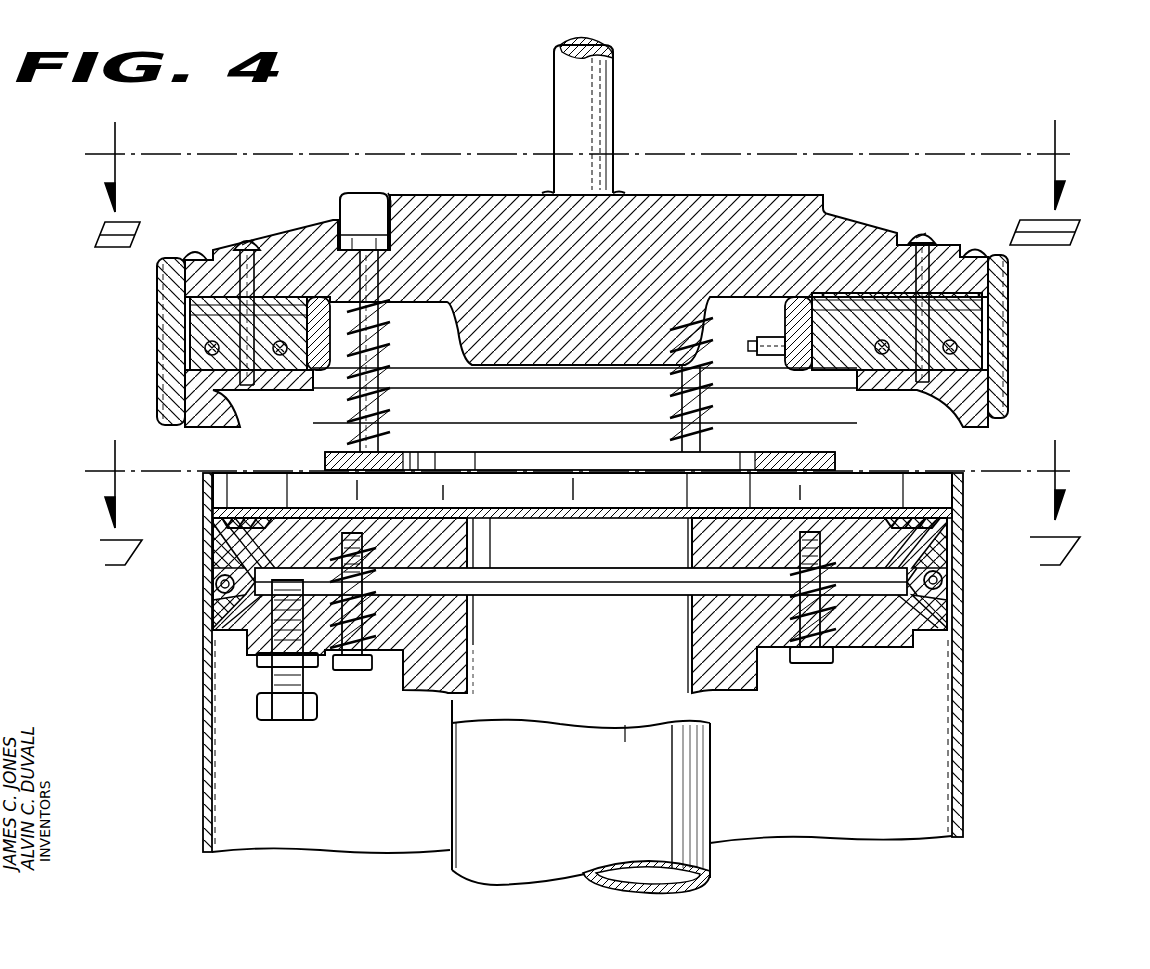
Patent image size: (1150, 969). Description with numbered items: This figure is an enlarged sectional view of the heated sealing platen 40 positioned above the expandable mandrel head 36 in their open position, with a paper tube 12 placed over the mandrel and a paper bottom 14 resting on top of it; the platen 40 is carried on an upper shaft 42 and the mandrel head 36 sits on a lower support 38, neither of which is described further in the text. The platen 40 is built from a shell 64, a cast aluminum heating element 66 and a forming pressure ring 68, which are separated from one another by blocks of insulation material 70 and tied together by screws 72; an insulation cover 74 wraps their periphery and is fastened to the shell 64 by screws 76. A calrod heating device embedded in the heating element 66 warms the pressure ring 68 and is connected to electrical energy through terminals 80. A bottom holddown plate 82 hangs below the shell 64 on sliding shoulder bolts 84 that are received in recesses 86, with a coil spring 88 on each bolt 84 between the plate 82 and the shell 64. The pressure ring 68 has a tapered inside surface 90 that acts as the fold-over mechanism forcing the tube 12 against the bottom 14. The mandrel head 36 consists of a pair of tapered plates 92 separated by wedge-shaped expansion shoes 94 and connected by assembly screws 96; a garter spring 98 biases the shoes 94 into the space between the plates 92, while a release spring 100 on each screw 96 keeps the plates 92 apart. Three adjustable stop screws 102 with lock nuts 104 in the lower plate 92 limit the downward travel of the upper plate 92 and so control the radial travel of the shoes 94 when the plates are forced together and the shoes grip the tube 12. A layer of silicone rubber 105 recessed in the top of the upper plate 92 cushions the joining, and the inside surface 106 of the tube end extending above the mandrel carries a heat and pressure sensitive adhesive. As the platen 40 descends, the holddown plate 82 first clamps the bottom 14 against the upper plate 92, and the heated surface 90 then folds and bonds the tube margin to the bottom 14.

The paper tube 12 is at (965, 770).
The paper bottom 14 is at (631, 510).
The expandable mandrel head 36 is at (930, 651).
The shaft 38 is at (486, 858).
The heated sealing platen 40 is at (672, 190).
The drive shaft 42 is at (597, 86).
The shell 64 is at (790, 205).
The cast aluminum heating element 66 is at (962, 338).
The forming pressure ring 68 is at (952, 346).
The blocks of insulation material 70 is at (975, 330).
The screws 72 is at (262, 206).
The insulation cover 74 is at (1009, 268).
The screws 76 is at (192, 256).
The terminals 80 is at (756, 340).
The bottom holddown plate 82 is at (826, 466).
The sliding shoulder bolts 84 is at (364, 245).
The recesses 86 is at (398, 205).
The coil spring 88 is at (363, 432).
The tapered inside surface 90 is at (213, 400).
The tapered plates 92 is at (927, 546).
The expansion shoes 94 is at (222, 556).
The assembly screws 96 is at (351, 675).
The garter spring 98 is at (216, 585).
The release spring 100 is at (382, 630).
The adjustable stop screws 102 is at (258, 706).
The lock nuts 104 is at (258, 661).
The layer of silicone rubber 105 is at (227, 524).
The inside surface 106 is at (216, 492).